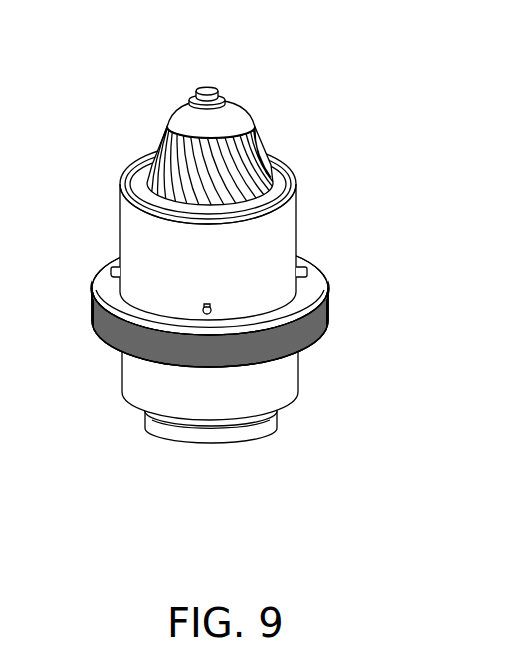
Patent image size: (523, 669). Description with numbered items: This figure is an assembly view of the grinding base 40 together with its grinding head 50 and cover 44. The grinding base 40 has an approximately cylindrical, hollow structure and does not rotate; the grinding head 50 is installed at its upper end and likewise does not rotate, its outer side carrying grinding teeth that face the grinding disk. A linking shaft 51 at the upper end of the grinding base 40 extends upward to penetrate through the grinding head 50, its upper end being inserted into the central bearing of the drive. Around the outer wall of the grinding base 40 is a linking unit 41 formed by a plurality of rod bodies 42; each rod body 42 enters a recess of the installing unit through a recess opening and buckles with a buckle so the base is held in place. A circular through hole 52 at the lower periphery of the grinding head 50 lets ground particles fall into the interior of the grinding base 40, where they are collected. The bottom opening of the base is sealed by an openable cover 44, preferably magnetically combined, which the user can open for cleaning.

The grinding base 40 is at (299, 227).
The linking unit 41 is at (320, 265).
The rod body 42 is at (205, 305).
The cover 44 is at (300, 373).
The grinding head 50 is at (265, 122).
The linking shaft 51 is at (211, 85).
The circular through hole 52 is at (273, 172).